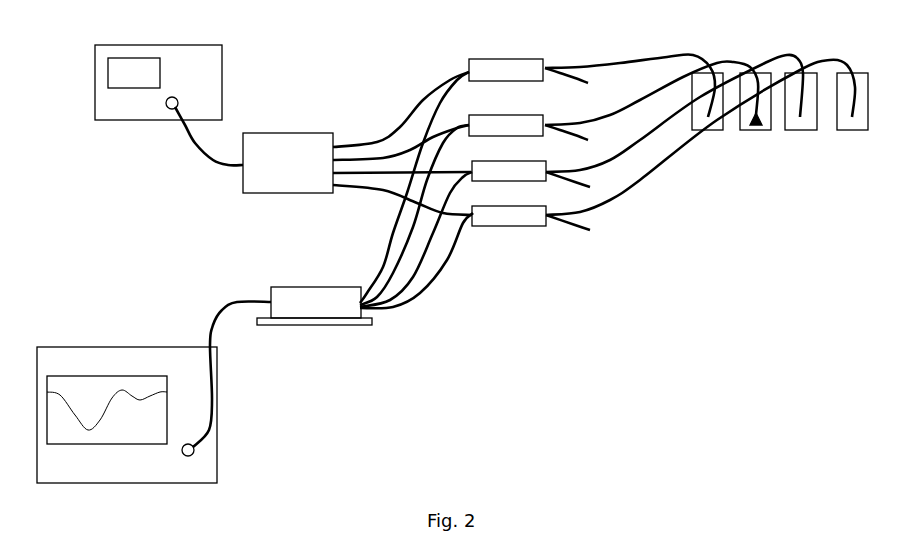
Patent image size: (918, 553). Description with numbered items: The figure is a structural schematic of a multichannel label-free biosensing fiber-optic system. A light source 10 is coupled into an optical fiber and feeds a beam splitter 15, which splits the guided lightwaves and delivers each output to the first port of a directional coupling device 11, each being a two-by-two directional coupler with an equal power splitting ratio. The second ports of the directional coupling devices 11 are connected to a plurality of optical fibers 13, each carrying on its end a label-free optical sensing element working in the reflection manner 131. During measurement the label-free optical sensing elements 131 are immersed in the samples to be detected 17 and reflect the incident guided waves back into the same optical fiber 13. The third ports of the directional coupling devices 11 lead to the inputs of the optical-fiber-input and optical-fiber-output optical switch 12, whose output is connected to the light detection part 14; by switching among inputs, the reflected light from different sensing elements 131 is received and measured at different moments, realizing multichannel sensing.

The light source 10 is at (223, 95).
The directional coupling device 11 is at (520, 59).
The optical-fiber-input and optical-fiber-output optical switch 12 is at (305, 290).
The optical fibers 13 is at (747, 62).
The label-free optical sensing element working in the reflection manner 131 is at (758, 125).
The light detection part 14 is at (213, 422).
The beam splitter 15 is at (293, 133).
The samples to be detected 17 is at (808, 123).